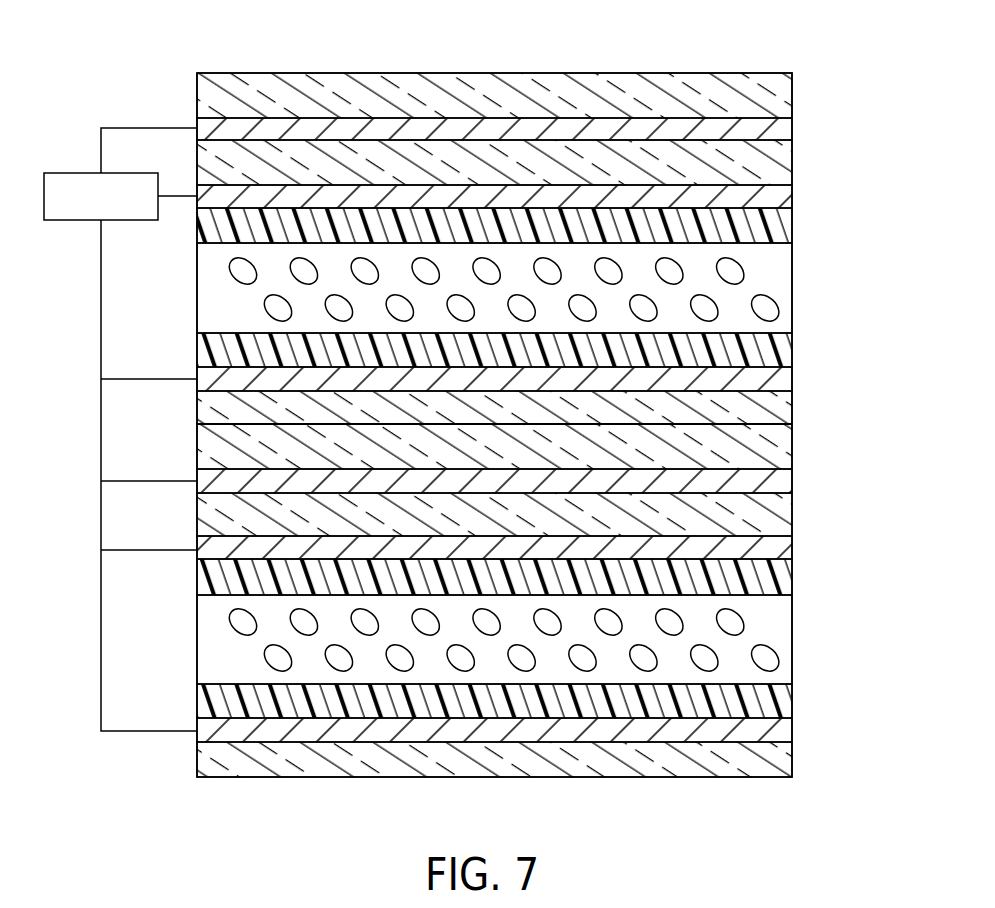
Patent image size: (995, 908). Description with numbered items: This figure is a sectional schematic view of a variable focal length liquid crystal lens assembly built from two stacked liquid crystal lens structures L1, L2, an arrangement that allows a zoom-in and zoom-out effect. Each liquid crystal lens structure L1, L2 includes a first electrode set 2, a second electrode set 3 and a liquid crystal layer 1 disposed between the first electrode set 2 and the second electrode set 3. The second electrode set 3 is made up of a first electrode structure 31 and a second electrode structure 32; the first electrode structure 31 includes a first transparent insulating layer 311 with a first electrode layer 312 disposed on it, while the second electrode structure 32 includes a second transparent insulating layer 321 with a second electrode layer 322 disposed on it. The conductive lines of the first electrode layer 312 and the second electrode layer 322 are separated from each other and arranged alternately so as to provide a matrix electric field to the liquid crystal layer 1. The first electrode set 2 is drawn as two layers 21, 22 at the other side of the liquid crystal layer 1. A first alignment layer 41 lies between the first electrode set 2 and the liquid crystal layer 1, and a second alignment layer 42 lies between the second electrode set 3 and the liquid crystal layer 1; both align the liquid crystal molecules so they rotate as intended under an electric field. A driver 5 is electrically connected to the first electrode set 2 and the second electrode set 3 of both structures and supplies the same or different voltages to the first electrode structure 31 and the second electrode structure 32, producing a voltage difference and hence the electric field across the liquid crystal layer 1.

The liquid crystal layer 1 is at (793, 272).
The first electrode set 2 is at (546, 574).
The first electrode set layer 21 is at (793, 411).
The first electrode set layer 22 is at (793, 382).
The second electrode set 3 is at (580, 320).
The first electrode structure 31 is at (560, 287).
The first transparent insulating layer 311 is at (793, 99).
The first electrode layer 312 is at (793, 132).
The second electrode structure 32 is at (560, 354).
The second transparent insulating layer 321 is at (793, 166).
The second electrode layer 322 is at (793, 199).
The first alignment layer 41 is at (793, 351).
The second alignment layer 42 is at (793, 231).
The driver 5 is at (70, 173).
The liquid crystal lens structure L1 is at (190, 72).
The liquid crystal lens structure L2 is at (190, 455).